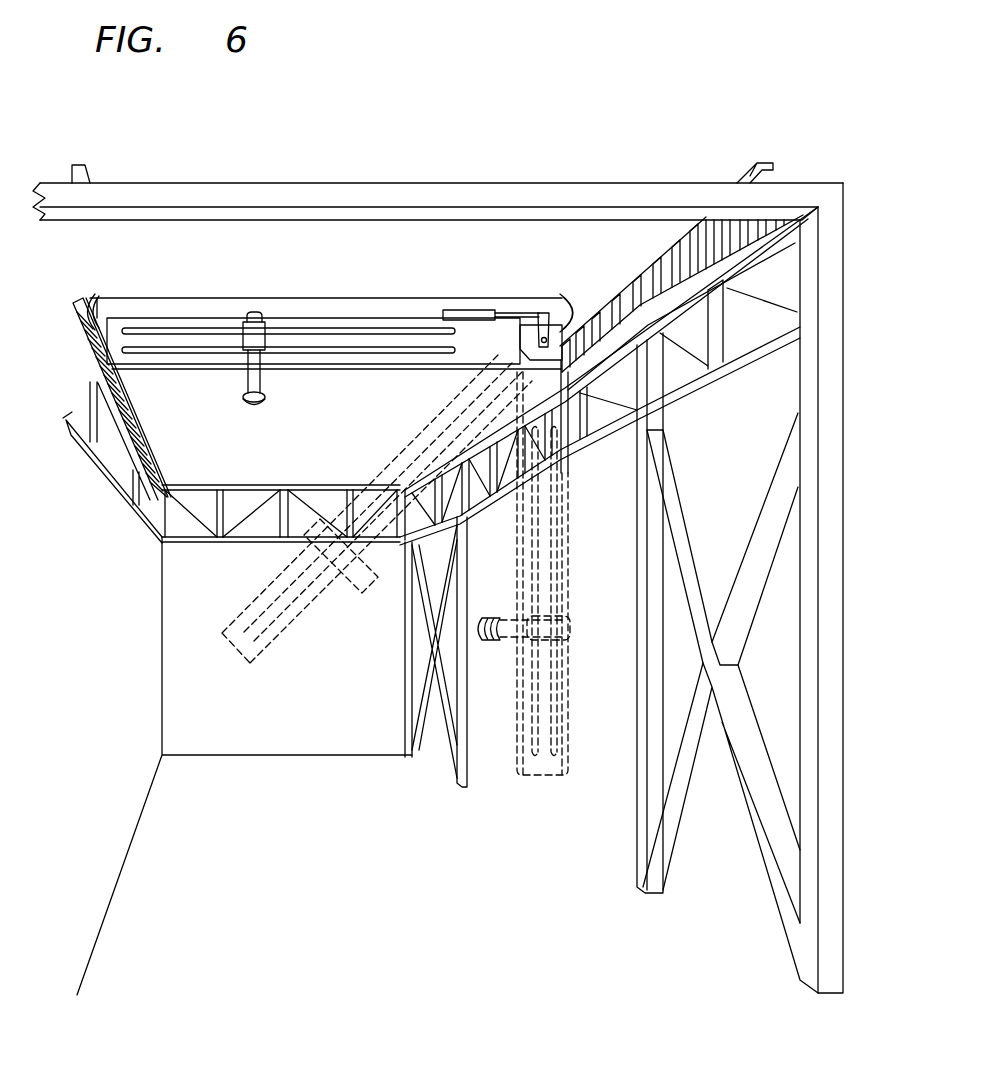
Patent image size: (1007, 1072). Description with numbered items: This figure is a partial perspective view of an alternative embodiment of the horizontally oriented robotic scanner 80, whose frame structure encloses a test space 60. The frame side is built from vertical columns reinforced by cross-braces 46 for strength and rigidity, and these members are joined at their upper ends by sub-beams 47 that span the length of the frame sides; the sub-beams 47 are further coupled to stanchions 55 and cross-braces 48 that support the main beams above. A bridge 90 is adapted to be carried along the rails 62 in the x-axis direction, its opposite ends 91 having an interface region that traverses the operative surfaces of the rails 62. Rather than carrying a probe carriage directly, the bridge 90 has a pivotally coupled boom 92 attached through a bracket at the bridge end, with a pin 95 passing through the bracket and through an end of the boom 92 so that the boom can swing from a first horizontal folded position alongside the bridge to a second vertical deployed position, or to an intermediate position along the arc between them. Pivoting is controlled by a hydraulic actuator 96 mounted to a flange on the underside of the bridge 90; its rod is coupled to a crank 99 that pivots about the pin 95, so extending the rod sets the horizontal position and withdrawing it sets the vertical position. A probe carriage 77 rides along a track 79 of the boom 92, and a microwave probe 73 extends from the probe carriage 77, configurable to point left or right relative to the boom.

The robotic scanner 80 is at (435, 162).
The rails 62 is at (655, 247).
The stanchions 55 is at (735, 352).
The cross-braces 48 is at (680, 375).
The cross-braces 46 is at (753, 530).
The sub-beams 47 is at (588, 453).
The bridge 90 is at (200, 303).
The boom 92 is at (170, 362).
The opposite ends 91 is at (567, 327).
The hydraulic actuator 96 is at (468, 312).
The crank 99 is at (540, 312).
The pin 95 is at (537, 338).
The microwave probe 73 is at (483, 637).
The probe carriage 77 is at (550, 627).
The track 79 is at (547, 717).
The test space 60 is at (215, 733).